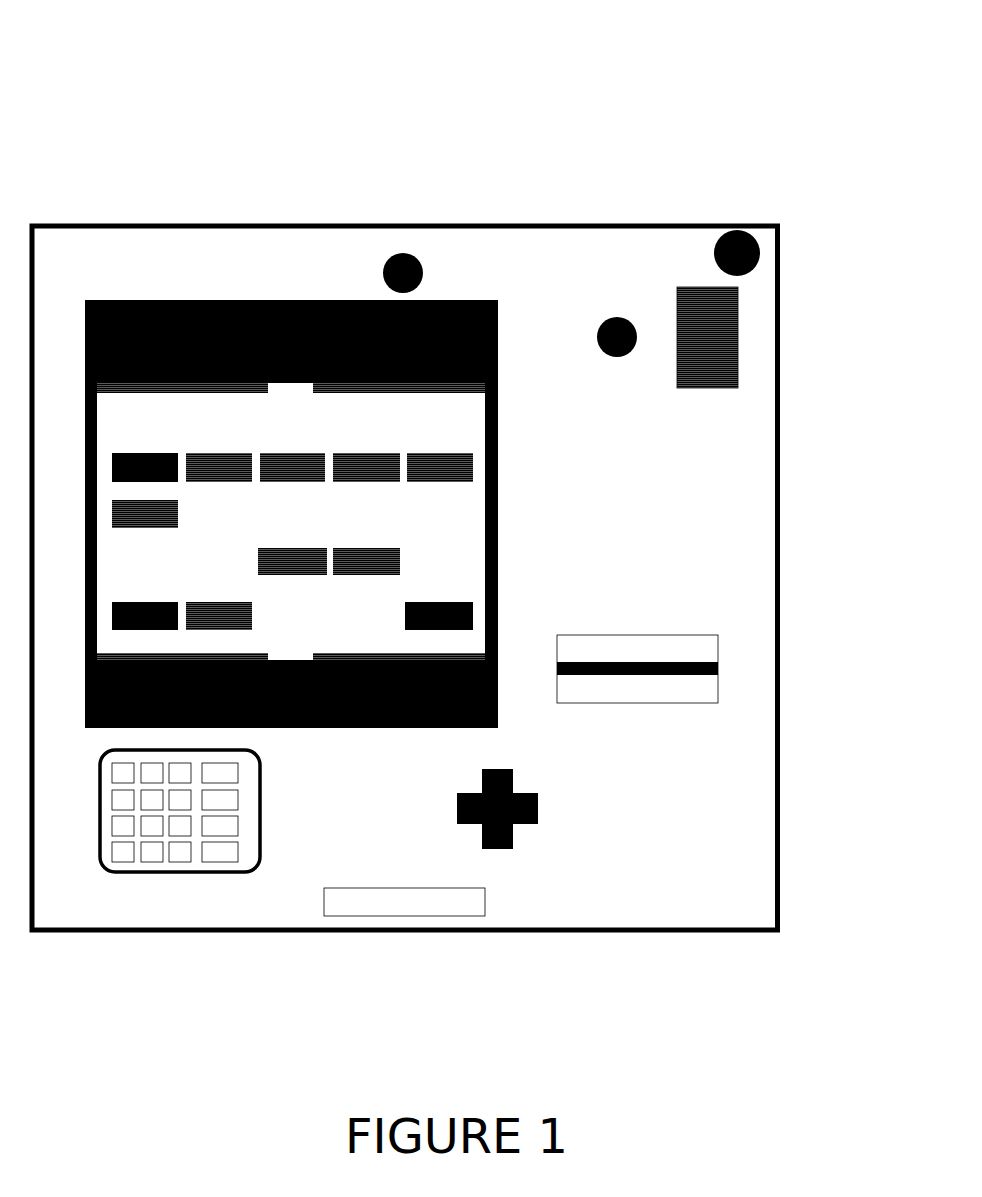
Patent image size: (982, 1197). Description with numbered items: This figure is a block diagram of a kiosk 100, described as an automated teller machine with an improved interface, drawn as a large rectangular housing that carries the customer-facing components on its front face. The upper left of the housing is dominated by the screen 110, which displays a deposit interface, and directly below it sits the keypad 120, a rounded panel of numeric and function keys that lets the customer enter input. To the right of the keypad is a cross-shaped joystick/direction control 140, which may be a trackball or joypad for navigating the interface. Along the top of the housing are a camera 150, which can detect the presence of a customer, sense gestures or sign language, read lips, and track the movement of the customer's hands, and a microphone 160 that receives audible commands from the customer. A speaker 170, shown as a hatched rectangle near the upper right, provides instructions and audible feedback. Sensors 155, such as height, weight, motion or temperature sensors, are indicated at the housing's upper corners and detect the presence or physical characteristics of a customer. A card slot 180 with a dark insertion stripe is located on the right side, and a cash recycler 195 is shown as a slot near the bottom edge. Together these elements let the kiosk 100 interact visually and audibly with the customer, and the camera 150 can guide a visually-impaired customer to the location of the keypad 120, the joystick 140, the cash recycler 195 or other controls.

The kiosk 100 is at (762, 86).
The screen 110 is at (193, 300).
The keypad 120 is at (176, 876).
The joystick/direction control 140 is at (499, 853).
The camera 150 is at (425, 265).
The sensors 155 is at (764, 272).
The microphone 160 is at (603, 359).
The speaker 170 is at (696, 394).
The card slot 180 is at (642, 613).
The cash recycler 195 is at (402, 919).